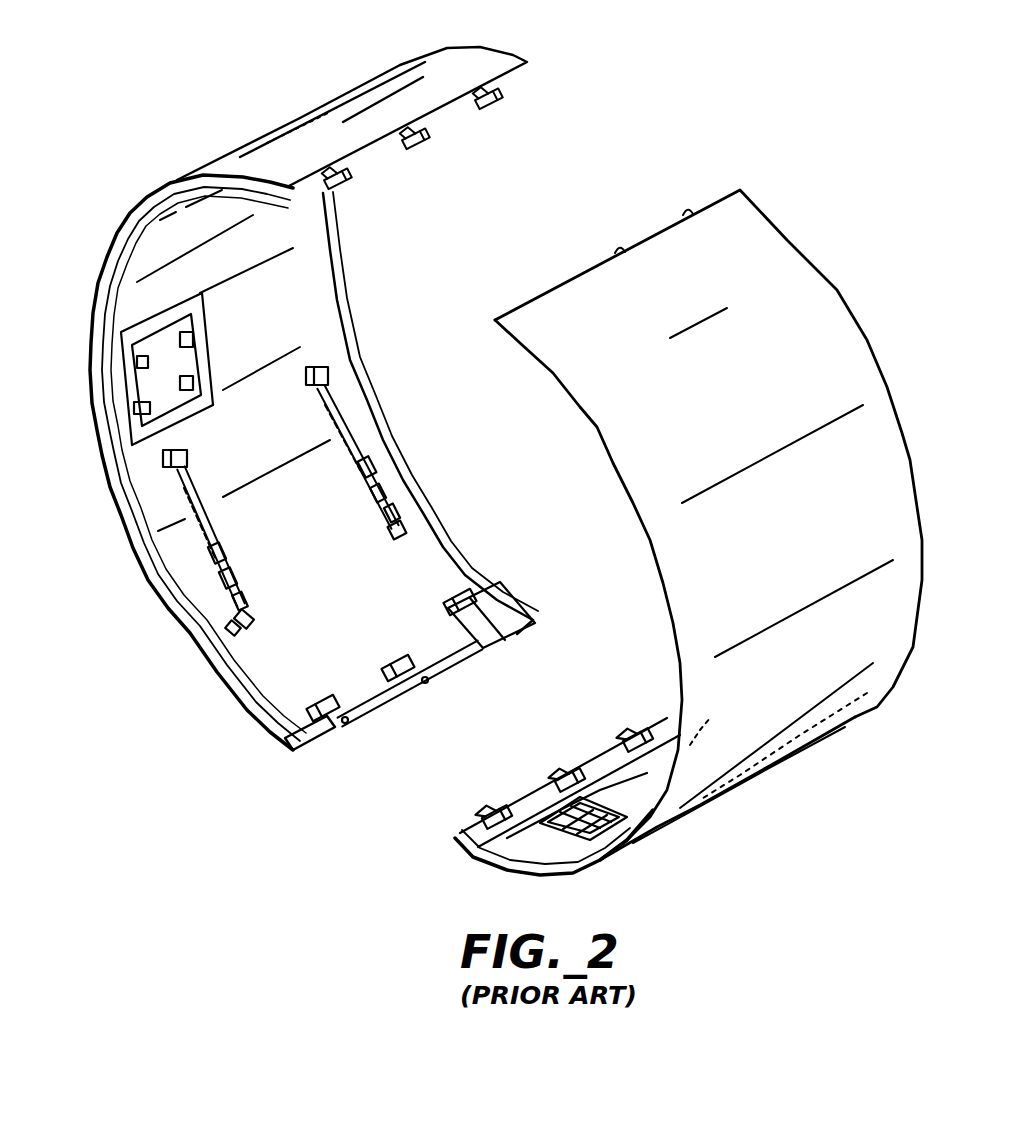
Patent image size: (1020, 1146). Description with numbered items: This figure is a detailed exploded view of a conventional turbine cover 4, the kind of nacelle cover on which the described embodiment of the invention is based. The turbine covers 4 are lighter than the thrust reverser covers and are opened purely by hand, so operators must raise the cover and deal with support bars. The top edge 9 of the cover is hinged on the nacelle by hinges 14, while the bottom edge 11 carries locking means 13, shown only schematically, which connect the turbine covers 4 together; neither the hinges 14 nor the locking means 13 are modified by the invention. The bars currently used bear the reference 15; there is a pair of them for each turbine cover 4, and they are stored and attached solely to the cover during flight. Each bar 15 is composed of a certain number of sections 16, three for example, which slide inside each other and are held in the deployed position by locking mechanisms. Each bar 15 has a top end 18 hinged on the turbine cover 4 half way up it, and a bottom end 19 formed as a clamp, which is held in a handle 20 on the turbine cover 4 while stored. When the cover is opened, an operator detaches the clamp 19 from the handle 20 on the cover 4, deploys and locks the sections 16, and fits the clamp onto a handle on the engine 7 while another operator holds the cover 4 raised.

The turbine cover 4 is at (333, 89).
The engine 7 is at (238, 585).
The top edge 9 is at (364, 148).
The bottom edge 11 is at (603, 753).
The locking means 13 is at (483, 792).
The hinges 14 is at (502, 98).
The bars 15 is at (355, 414).
The sections 16 is at (218, 545).
The top end 18 is at (320, 378).
The bottom end 19 is at (247, 620).
The handle 20 is at (230, 627).